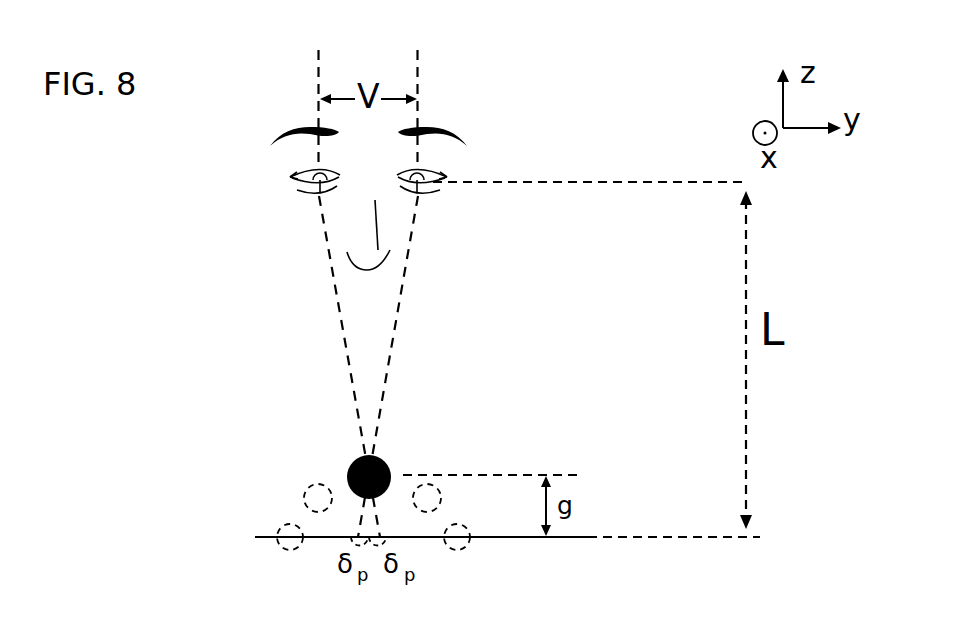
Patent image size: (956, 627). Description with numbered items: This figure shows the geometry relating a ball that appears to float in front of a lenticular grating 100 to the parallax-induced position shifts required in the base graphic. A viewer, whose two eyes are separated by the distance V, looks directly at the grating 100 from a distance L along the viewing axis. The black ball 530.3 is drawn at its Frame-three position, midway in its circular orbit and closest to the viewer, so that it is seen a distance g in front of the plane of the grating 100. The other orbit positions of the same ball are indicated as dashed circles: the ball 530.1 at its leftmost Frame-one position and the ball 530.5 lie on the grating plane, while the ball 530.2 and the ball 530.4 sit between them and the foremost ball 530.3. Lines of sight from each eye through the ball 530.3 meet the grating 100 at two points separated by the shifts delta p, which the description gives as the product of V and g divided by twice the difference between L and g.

The grating 100 is at (250, 538).
The ball in Frame 1 530.1 is at (467, 544).
The ball in Frame 2 530.2 is at (433, 481).
The ball in Frame 3 530.3 is at (393, 466).
The ball in Frame 4 530.4 is at (307, 490).
The ball in Frame 5 530.5 is at (285, 547).